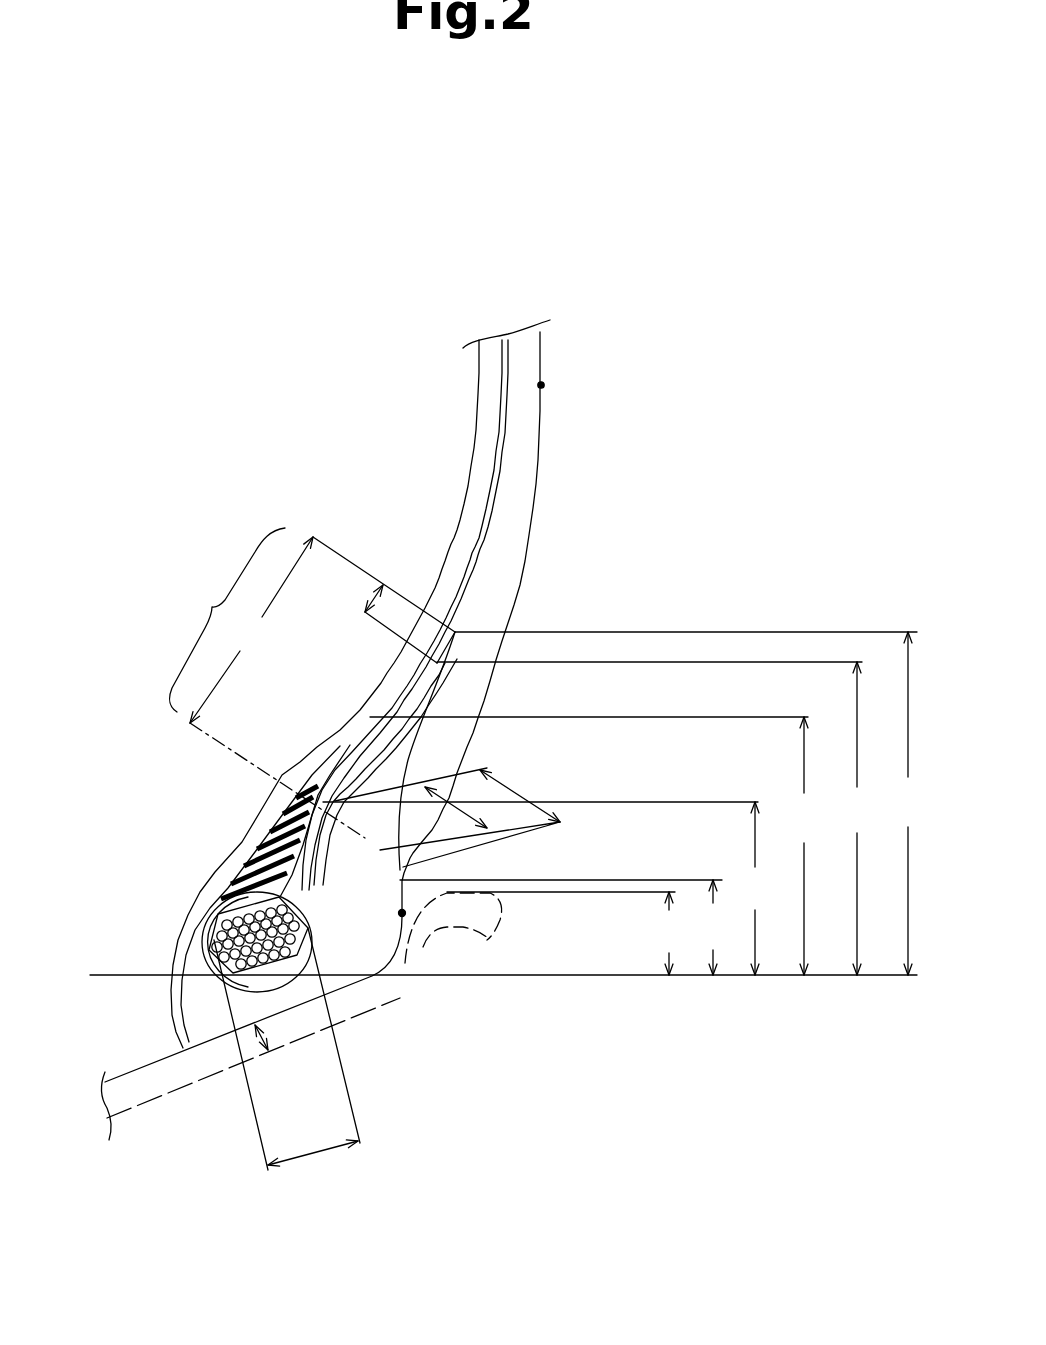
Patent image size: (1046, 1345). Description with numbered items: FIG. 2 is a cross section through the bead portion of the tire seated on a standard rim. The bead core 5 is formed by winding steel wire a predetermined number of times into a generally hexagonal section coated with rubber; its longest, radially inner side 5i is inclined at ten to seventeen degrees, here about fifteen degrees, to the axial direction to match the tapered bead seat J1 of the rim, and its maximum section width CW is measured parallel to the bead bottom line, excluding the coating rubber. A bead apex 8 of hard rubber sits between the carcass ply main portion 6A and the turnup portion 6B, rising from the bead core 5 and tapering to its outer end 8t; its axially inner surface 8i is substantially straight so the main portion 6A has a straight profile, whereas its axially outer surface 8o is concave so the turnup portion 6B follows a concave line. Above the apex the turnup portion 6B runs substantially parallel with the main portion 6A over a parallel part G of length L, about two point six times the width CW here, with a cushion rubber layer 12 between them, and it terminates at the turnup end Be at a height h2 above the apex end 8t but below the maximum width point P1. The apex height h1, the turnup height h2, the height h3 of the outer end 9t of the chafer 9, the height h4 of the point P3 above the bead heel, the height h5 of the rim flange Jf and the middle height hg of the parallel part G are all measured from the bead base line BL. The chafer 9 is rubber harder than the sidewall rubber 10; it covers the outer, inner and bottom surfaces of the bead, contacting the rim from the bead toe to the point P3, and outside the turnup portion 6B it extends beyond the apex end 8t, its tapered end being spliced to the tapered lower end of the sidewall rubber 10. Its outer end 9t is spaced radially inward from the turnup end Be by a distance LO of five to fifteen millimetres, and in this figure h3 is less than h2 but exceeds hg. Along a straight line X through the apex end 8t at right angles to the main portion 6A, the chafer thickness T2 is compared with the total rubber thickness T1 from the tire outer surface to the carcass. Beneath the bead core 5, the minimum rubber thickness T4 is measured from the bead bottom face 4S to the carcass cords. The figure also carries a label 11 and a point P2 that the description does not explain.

The bead core 5 is at (200, 928).
The radially inner side of the bead core 5i is at (156, 1128).
The bead bottom face 4S is at (236, 1109).
The carcass ply main portion 6A is at (470, 555).
The carcass turnup portion 6B is at (383, 718).
The bead apex 8 is at (245, 830).
The axially inner surface of the bead apex 8i is at (252, 860).
The axially outer surface of the bead apex 8o is at (368, 1011).
The radially outer end of the bead apex 8t is at (280, 785).
The chafer 9 is at (387, 842).
The radially outer end of the chafer 9t is at (458, 656).
The sidewall rubber 10 is at (525, 488).
The boundary between clinch rubber and sidewall rubber 11 is at (433, 698).
The cushion rubber layer 12 is at (342, 758).
The maximum width point of the tire P1 is at (541, 385).
The point P2 where tire separates from rim flange P2 is at (471, 1052).
The point above the bead heel P3 is at (412, 875).
The turnup end Be is at (465, 622).
The bead base line BL is at (495, 976).
The parallel part G is at (227, 620).
The length of the parallel part L is at (322, 630).
The spacing distance LO is at (374, 596).
The straight line X is at (217, 741).
The total rubber thickness T1 is at (522, 790).
The thickness of the rubber chafer T2 is at (477, 818).
The minimum rubber thickness T4 is at (262, 1048).
The maximum section width of the bead core CW is at (316, 1156).
The bead apex height h1 is at (549, 888).
The carcass turnup height h2 is at (691, 803).
The height of the chafer outer end h3 is at (655, 818).
The height of point P3 h4 is at (565, 927).
The rim flange height h5 is at (564, 933).
The middle height of the parallel part hg is at (596, 846).
The rim flange Jf is at (505, 925).
The tapered bead seat J1 is at (118, 1072).